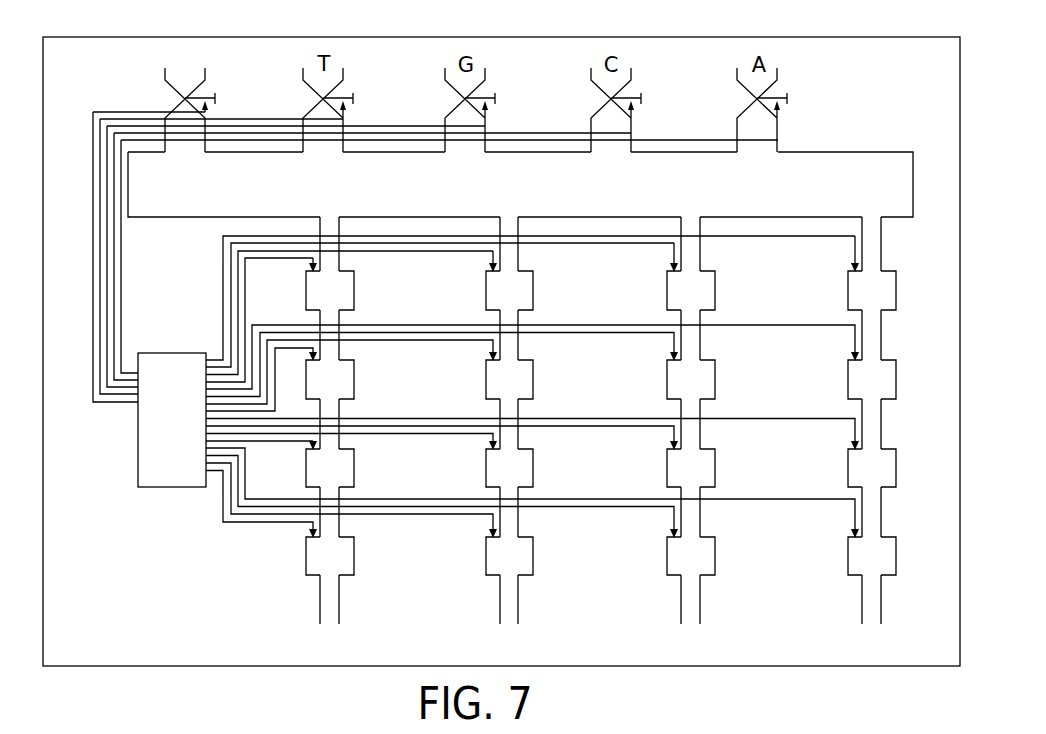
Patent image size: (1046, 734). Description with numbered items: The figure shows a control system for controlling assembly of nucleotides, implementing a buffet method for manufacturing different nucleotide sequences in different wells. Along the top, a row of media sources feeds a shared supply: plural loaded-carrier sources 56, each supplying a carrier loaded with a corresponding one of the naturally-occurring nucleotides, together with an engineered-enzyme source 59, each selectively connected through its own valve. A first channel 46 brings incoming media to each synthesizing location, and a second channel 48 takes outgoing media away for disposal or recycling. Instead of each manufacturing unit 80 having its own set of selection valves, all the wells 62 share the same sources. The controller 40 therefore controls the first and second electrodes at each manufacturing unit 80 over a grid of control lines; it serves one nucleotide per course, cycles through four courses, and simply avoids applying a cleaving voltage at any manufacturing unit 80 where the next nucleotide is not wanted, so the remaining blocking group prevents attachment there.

The controller 40 is at (172, 420).
The first channel 46 is at (883, 256).
The second channel 48 is at (883, 324).
The loaded-carrier source 56 is at (445, 71).
The engineered-enzyme source 59 is at (163, 78).
The well 62 is at (897, 290).
The manufacturing unit 80 is at (847, 289).